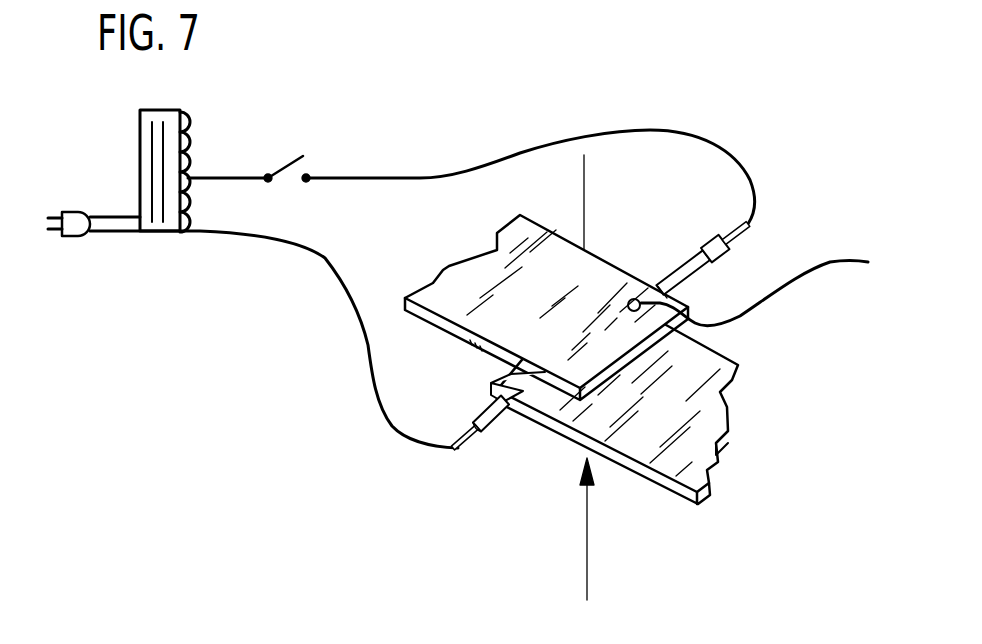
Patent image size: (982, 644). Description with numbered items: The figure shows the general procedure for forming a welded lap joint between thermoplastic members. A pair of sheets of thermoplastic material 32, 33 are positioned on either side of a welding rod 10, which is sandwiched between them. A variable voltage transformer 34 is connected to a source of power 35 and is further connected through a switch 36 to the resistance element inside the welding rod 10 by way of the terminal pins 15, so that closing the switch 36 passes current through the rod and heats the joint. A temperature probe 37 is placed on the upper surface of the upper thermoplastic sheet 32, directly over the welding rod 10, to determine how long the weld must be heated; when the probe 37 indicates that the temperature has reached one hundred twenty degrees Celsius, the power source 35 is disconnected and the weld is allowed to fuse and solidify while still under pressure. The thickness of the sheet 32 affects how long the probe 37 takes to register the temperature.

The welding rod 10 is at (683, 268).
The terminal pins 15 is at (725, 259).
The thermoplastic sheet 32 is at (465, 282).
The thermoplastic sheet 33 is at (692, 410).
The variable voltage transformer 34 is at (187, 113).
The source of power 35 is at (83, 208).
The switch 36 is at (312, 164).
The temperature probe 37 is at (740, 318).